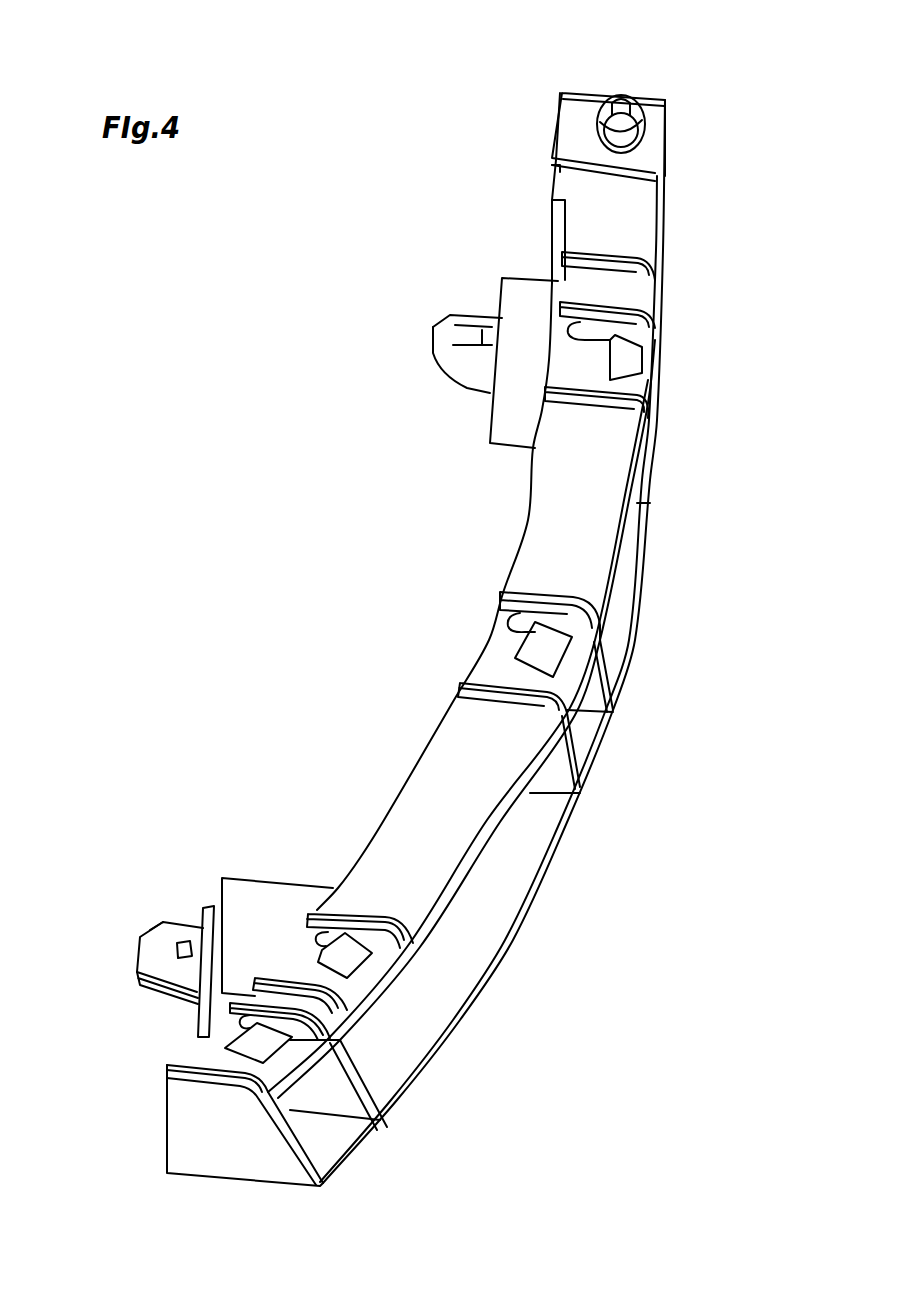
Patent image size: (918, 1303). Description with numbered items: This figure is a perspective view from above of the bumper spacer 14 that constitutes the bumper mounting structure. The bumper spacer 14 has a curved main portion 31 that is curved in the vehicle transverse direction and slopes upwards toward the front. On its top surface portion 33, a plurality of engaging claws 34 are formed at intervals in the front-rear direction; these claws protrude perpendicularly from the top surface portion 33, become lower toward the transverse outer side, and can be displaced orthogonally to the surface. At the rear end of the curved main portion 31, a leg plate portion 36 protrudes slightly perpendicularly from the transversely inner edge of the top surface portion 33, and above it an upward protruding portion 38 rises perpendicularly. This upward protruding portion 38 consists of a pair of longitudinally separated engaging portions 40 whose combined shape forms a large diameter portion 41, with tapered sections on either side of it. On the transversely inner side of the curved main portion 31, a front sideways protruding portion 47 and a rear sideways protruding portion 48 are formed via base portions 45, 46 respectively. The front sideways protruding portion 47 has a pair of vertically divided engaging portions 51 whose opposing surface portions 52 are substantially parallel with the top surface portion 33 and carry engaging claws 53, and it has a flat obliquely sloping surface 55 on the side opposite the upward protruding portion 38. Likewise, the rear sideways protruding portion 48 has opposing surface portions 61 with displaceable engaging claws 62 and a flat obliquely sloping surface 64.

The bumper spacer 14 is at (258, 338).
The curved main portion 31 is at (228, 1160).
The top surface portion 33 is at (572, 551).
The engaging claws 34 is at (633, 362).
The leg plate portion 36 is at (560, 166).
The upward protruding portion 38 is at (637, 82).
The engaging portions 40 is at (614, 98).
The large diameter portion 41 is at (627, 148).
The base portion 45 is at (243, 882).
The base portion 46 is at (513, 285).
The front sideways protruding portion 47 is at (138, 937).
The rear sideways protruding portion 48 is at (434, 365).
The engaging portions 51 is at (150, 947).
The surface portions 52 is at (150, 932).
The engaging claws 53 is at (183, 940).
The obliquely sloping surface 55 is at (150, 990).
The surface portions 61 is at (463, 322).
The engaging claws 62 is at (465, 332).
The obliquely sloping surface 64 is at (455, 383).